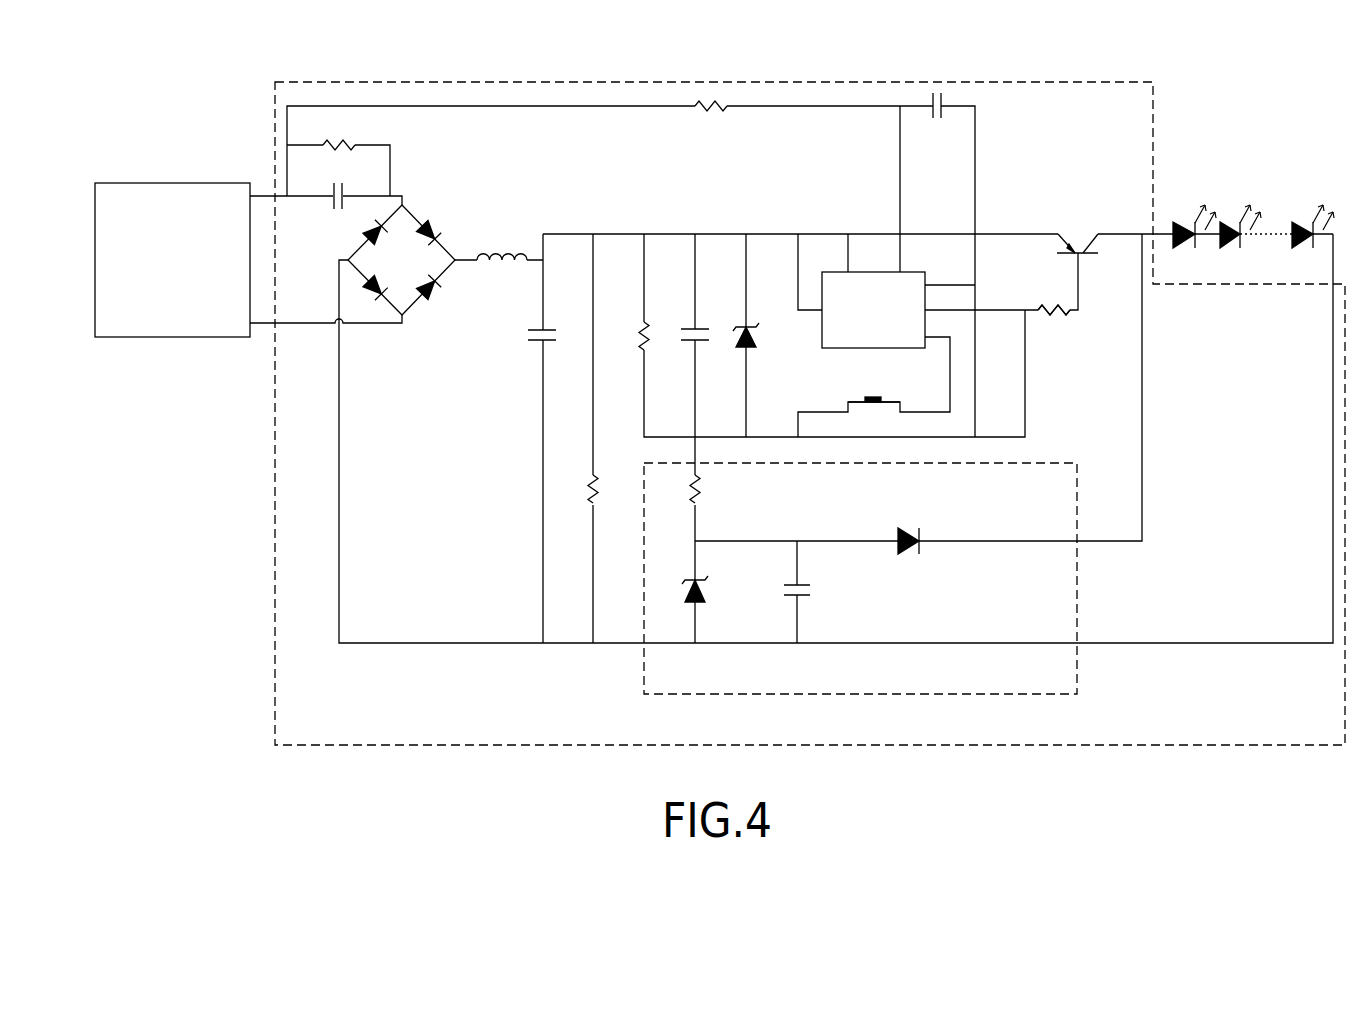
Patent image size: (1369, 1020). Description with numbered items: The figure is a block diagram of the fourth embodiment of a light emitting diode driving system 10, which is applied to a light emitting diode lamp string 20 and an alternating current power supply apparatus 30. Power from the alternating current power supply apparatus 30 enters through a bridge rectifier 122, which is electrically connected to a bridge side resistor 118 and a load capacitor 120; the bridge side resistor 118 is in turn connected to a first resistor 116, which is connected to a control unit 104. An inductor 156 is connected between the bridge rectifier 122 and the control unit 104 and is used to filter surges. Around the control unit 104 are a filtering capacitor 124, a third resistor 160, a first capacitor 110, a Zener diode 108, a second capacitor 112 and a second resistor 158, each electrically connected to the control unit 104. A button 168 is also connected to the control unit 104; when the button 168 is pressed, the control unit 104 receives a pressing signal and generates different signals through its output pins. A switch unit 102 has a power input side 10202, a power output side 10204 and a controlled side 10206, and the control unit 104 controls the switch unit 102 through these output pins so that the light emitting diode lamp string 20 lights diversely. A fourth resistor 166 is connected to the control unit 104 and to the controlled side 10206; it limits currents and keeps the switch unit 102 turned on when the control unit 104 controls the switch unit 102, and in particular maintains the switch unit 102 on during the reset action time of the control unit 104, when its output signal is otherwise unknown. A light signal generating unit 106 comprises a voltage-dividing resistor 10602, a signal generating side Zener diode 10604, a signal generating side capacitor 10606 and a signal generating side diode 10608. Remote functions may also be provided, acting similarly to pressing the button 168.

The light emitting diode driving system 10 is at (278, 693).
The light emitting diode lamp string 20 is at (1253, 205).
The alternating current power supply apparatus 30 is at (173, 188).
The switch unit 102 is at (1098, 250).
The power input side 10202 is at (1033, 237).
The power output side 10204 is at (1103, 238).
The controlled side 10206 is at (1060, 315).
The control unit 104 is at (822, 335).
The light signal generating unit 106 is at (1073, 603).
The voltage-dividing resistor 10602 is at (705, 490).
The signal generating side Zener diode 10604 is at (707, 590).
The signal generating side capacitor 10606 is at (812, 590).
The signal generating side diode 10608 is at (912, 530).
The Zener diode 108 is at (757, 338).
The first capacitor 110 is at (708, 338).
The second capacitor 112 is at (937, 118).
The first resistor 116 is at (702, 108).
The bridge side resistor 118 is at (353, 142).
The load capacitor 120 is at (334, 180).
The bridge rectifier 122 is at (440, 223).
The filtering capacitor 124 is at (553, 335).
The inductor 156 is at (493, 265).
The second resistor 158 is at (600, 495).
The third resistor 160 is at (658, 338).
The fourth resistor 166 is at (1048, 320).
The button 168 is at (890, 398).